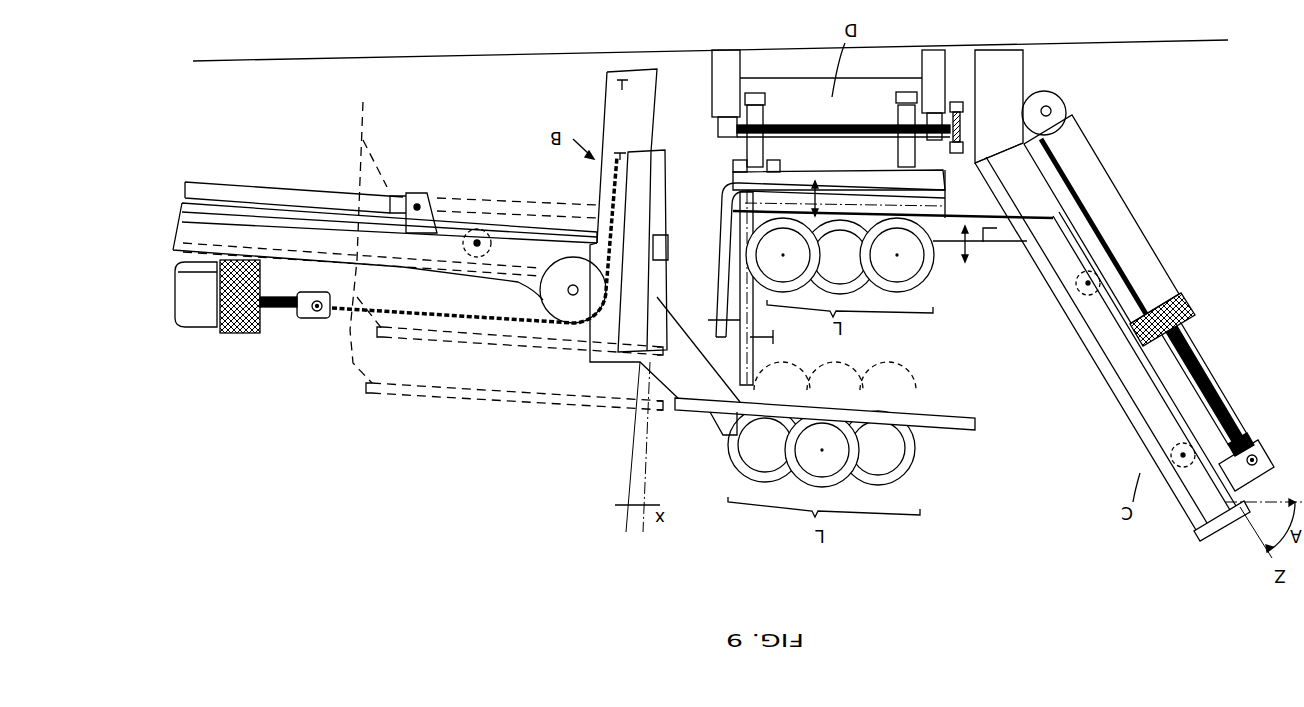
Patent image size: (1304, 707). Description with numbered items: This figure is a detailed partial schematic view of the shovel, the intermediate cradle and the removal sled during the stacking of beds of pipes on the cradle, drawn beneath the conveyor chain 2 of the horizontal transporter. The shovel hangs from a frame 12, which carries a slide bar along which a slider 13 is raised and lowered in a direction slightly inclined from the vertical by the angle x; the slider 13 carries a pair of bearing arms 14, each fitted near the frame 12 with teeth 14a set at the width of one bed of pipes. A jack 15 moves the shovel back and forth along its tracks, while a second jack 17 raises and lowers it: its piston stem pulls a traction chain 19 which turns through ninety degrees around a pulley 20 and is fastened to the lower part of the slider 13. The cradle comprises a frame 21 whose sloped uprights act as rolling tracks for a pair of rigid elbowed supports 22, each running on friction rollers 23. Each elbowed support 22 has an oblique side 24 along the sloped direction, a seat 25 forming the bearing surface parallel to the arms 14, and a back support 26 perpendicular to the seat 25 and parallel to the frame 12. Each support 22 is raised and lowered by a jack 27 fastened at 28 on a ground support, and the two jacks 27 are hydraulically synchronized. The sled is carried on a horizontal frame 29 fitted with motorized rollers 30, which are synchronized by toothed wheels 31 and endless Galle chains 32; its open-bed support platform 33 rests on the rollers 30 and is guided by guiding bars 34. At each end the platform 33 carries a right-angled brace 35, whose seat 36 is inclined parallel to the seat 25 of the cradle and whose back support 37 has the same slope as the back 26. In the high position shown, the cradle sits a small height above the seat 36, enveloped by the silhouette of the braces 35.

The conveyor chain 2 is at (1018, 140).
The frame 12 is at (603, 107).
The slider 13 is at (653, 163).
The bearing arm 14 is at (893, 236).
The teeth 14a is at (718, 430).
The jack 15 is at (237, 185).
The jack 17 is at (202, 323).
The traction chain 19 is at (490, 302).
The pulley 20 is at (543, 292).
The frame 21 is at (1217, 512).
The elbowed support 22 is at (1113, 373).
The friction roller 23 is at (1215, 427).
The oblique side 24 is at (1100, 330).
The seat 25 is at (990, 247).
The back support 26 is at (770, 326).
The jack 27 is at (1110, 200).
The fastening point 28 is at (1043, 97).
The frame 29 is at (930, 60).
The roller 30 is at (898, 107).
The toothed wheel 31 is at (960, 100).
The Galle chain 32 is at (960, 153).
The support platform 33 is at (897, 170).
The guiding bar 34 is at (750, 161).
The right-angled brace 35 is at (722, 197).
The seat 36 is at (787, 187).
The back support 37 is at (718, 248).